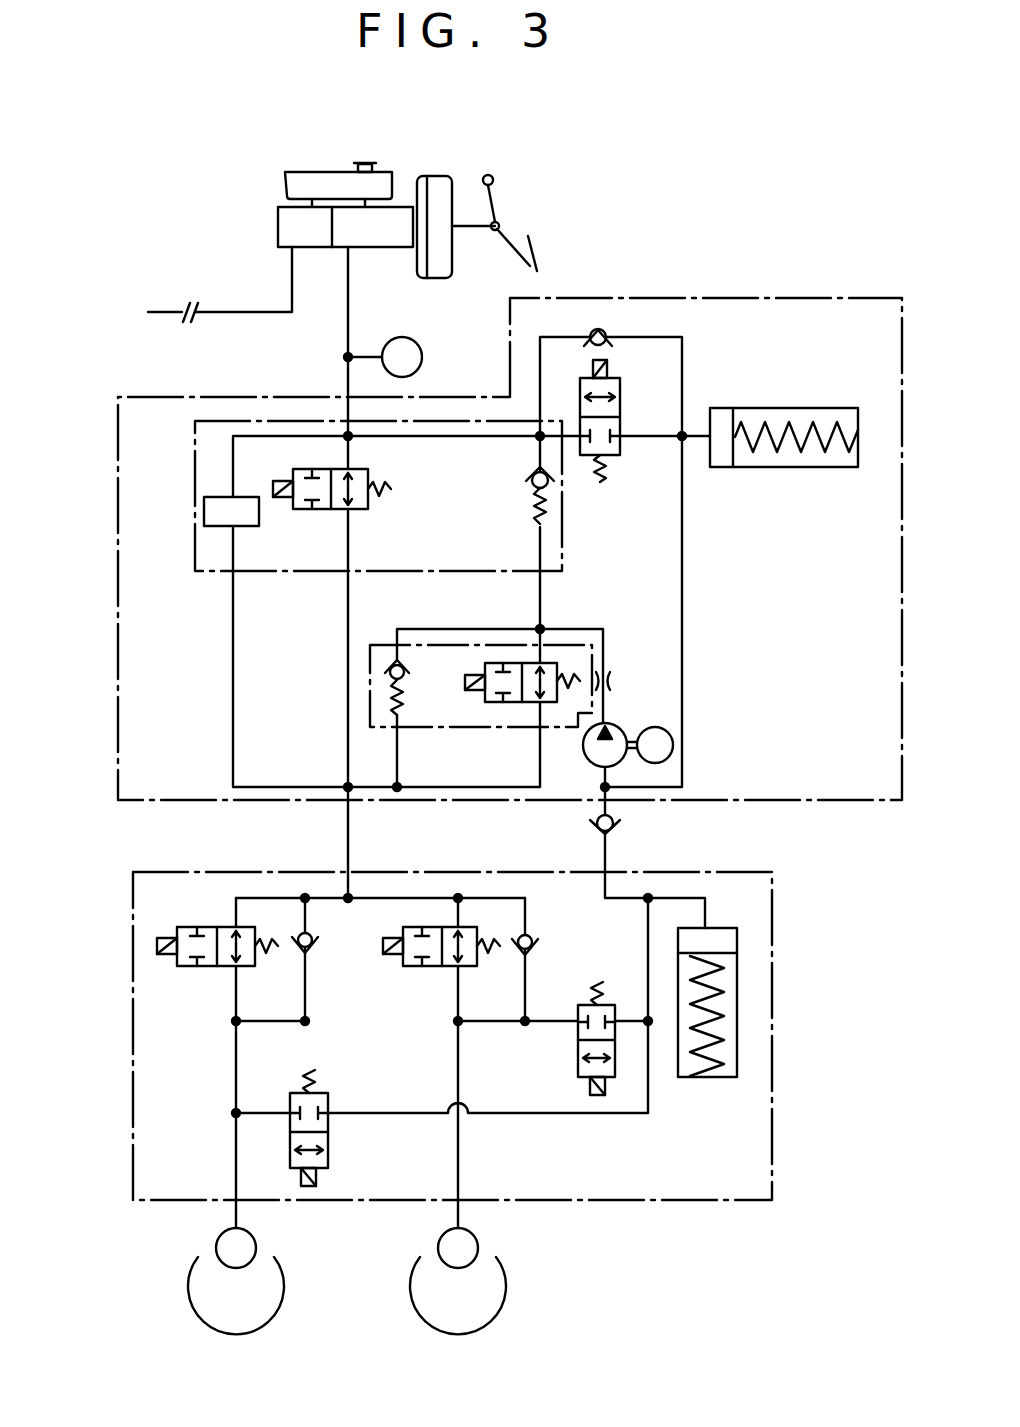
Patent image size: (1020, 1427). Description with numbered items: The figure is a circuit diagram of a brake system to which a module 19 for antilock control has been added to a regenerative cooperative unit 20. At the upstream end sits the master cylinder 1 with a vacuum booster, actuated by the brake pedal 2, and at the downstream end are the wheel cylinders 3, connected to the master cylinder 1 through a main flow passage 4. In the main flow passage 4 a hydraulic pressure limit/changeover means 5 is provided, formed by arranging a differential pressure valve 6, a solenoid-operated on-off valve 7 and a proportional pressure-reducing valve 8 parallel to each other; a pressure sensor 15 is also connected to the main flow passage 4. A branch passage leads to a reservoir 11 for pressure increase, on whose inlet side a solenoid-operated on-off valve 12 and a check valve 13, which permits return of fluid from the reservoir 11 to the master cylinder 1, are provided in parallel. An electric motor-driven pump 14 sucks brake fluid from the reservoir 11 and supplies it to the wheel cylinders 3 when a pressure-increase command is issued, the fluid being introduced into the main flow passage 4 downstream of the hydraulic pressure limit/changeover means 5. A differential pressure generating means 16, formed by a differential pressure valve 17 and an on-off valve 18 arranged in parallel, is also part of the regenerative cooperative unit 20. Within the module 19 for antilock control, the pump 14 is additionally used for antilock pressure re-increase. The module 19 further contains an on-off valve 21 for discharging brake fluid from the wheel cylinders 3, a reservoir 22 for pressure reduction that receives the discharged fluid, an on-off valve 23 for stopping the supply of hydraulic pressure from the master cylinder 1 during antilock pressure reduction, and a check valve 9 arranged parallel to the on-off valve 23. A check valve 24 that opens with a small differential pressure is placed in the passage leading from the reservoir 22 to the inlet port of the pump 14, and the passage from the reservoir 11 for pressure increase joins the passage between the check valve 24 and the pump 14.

The master cylinder 1 is at (290, 228).
The brake pedal 2 is at (508, 232).
The wheel cylinders 3 is at (250, 1246).
The main flow passage 4 is at (352, 301).
The hydraulic pressure limit/changeover means 5 is at (182, 457).
The differential pressure valve 6 is at (530, 490).
The solenoid-operated on-off valve 7 is at (366, 471).
The proportional pressure-reducing valve 8 is at (204, 515).
The check valve 9 is at (312, 945).
The reservoir for pressure increase 11 is at (768, 408).
The solenoid-operated on-off valve 12 is at (620, 388).
The check valve 13 is at (605, 331).
The electric motor-driven pump 14 is at (620, 732).
The pressure sensor 15 is at (421, 350).
The differential pressure generating means 16 is at (362, 688).
The differential pressure valve 17 is at (395, 660).
The on-off valve 18 is at (550, 663).
The module for antilock control 19 is at (120, 1025).
The regenerative cooperative unit 20 is at (822, 292).
The on-off valve 21 is at (578, 1045).
The reservoir for pressure reduction 22 is at (738, 1000).
The on-off valve 23 is at (210, 908).
The check valve 24 is at (612, 832).